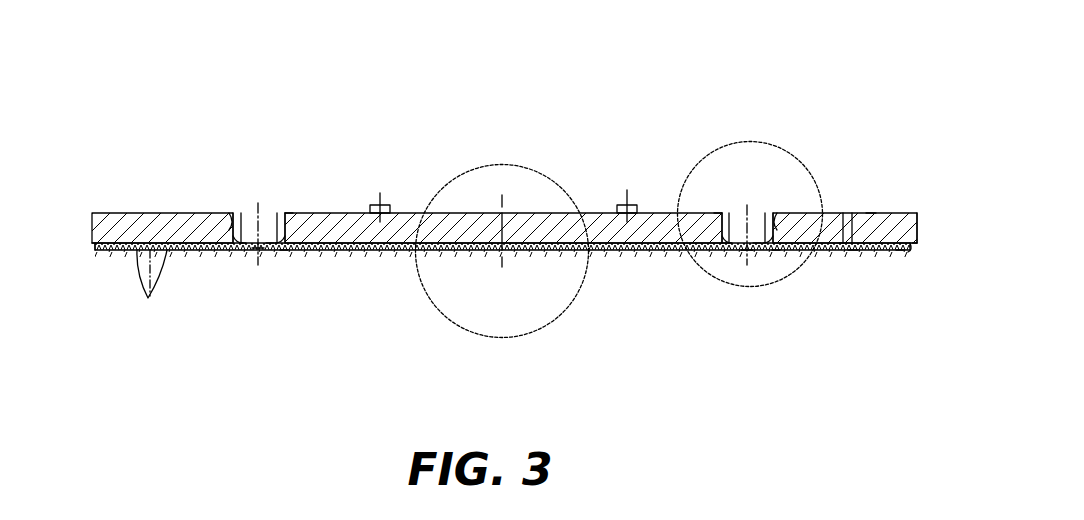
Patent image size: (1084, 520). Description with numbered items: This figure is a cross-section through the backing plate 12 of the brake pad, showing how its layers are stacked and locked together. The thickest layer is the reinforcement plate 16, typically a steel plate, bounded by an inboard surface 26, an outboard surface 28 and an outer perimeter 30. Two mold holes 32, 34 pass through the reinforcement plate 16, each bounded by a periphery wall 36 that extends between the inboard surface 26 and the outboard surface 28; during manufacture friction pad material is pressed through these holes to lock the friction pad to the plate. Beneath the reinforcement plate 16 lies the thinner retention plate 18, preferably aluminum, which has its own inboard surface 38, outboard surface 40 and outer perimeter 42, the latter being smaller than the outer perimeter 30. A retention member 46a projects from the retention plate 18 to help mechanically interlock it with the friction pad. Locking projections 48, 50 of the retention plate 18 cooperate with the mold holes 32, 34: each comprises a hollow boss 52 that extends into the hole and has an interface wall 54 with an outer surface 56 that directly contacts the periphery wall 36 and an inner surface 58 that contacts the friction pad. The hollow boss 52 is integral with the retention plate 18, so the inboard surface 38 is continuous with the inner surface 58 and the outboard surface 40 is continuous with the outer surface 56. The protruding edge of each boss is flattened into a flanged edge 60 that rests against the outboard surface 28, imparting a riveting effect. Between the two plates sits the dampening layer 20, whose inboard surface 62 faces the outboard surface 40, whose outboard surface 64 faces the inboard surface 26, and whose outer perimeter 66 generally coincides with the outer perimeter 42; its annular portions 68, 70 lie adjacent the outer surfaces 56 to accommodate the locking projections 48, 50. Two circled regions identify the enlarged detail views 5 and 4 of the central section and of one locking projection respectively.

The backing plate 12 is at (664, 85).
The reinforcement plate 16 is at (108, 213).
The retention plate 18 is at (108, 252).
The dampening layer 20 is at (95, 247).
The inboard surface 26 is at (922, 244).
The outboard surface 28 is at (870, 215).
The outer perimeter 30 is at (917, 213).
The mold hole 32 is at (262, 212).
The mold hole 34 is at (729, 252).
The periphery wall 36 is at (283, 252).
The inboard surface 38 is at (853, 252).
The outboard surface 40 is at (852, 213).
The outer perimeter 42 is at (900, 256).
The protrusion 46a is at (154, 292).
The locking projection 48 is at (258, 250).
The locking projection 50 is at (745, 256).
The hollow boss 52 is at (270, 248).
The interface wall 54 is at (277, 215).
The outer surface 56 is at (228, 226).
The inner surface 58 is at (245, 212).
The flanged edge 60 is at (288, 212).
The inboard surface 62 is at (843, 246).
The outboard surface 64 is at (843, 232).
The outer perimeter 66 is at (913, 251).
The annular portion 68 is at (243, 247).
The annular portion 70 is at (727, 247).
The detail view 5 is at (553, 187).
The detail view 4 is at (803, 160).